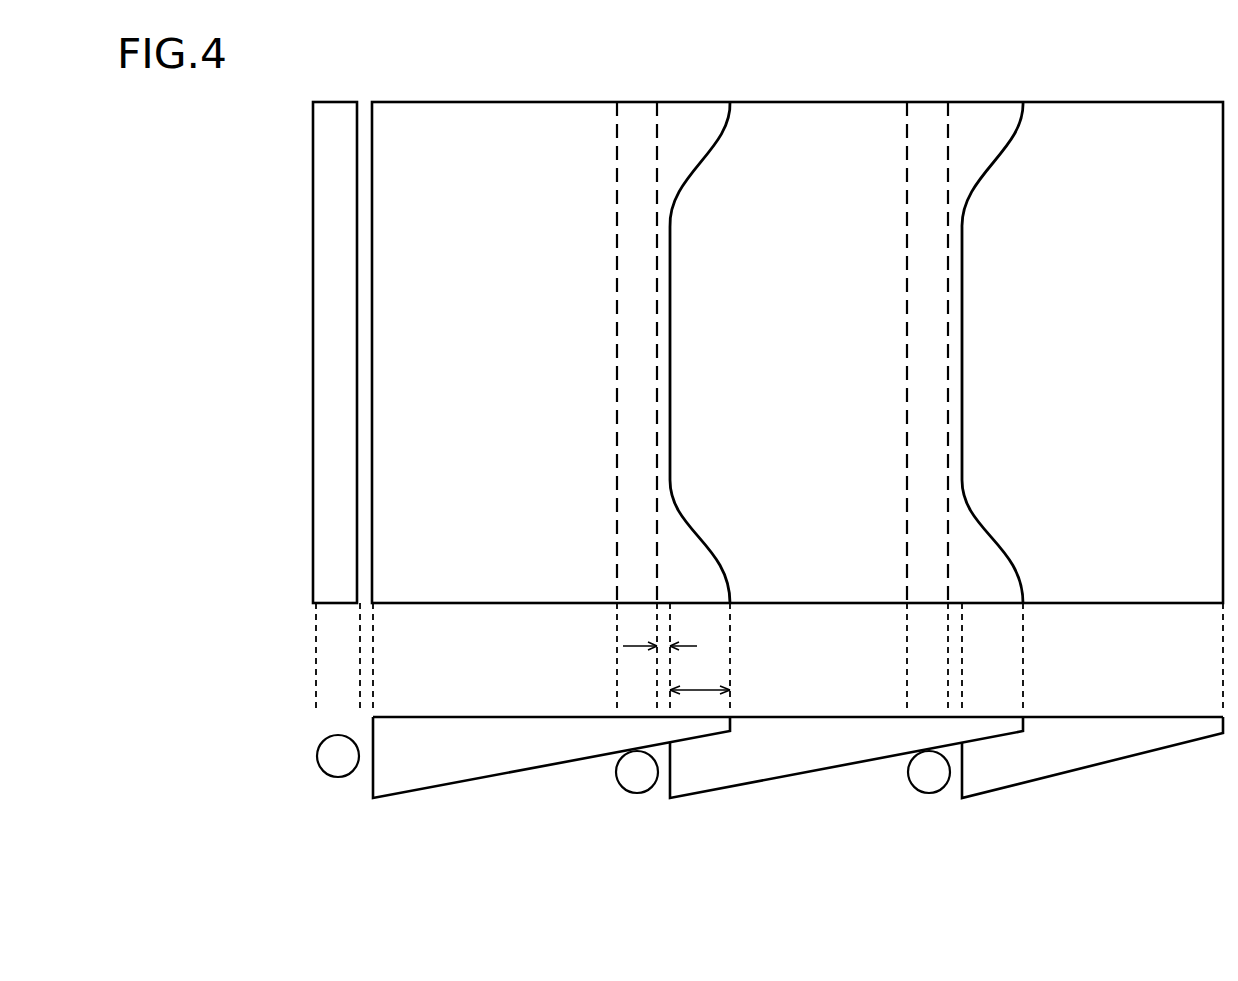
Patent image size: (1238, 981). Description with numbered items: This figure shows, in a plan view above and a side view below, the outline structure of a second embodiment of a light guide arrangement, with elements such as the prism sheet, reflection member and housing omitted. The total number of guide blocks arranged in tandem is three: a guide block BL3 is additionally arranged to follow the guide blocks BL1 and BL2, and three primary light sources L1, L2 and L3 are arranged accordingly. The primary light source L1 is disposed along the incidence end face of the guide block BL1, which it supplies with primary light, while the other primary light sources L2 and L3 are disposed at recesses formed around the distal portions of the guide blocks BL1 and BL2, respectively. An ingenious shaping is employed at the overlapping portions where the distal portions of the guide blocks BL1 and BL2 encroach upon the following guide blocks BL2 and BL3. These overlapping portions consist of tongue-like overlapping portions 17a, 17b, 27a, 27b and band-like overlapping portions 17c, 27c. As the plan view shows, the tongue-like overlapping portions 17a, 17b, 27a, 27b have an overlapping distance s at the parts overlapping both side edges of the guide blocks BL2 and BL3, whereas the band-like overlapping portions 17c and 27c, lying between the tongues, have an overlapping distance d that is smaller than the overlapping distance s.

The tongue-like overlapping portion 17a is at (682, 118).
The tongue-like overlapping portion 17b is at (706, 563).
The band-like overlapping portion 17c is at (670, 270).
The tongue-like overlapping portion 27a is at (972, 118).
The tongue-like overlapping portion 27b is at (997, 552).
The band-like overlapping portion 27c is at (962, 270).
The primary light source L1 is at (320, 813).
The primary light source L2 is at (620, 813).
The primary light source L3 is at (915, 813).
The guide block BL1 is at (527, 337).
The guide block BL2 is at (845, 337).
The guide block BL3 is at (1140, 337).
The overlapping distance d is at (660, 630).
The overlapping distance s is at (700, 673).